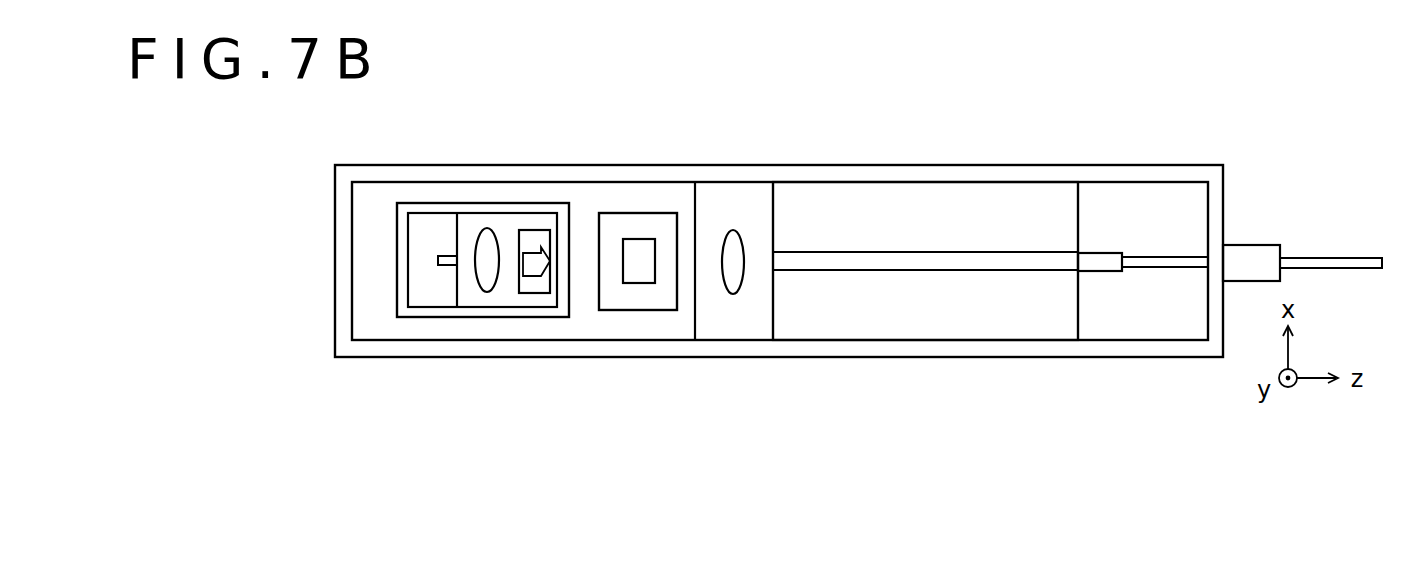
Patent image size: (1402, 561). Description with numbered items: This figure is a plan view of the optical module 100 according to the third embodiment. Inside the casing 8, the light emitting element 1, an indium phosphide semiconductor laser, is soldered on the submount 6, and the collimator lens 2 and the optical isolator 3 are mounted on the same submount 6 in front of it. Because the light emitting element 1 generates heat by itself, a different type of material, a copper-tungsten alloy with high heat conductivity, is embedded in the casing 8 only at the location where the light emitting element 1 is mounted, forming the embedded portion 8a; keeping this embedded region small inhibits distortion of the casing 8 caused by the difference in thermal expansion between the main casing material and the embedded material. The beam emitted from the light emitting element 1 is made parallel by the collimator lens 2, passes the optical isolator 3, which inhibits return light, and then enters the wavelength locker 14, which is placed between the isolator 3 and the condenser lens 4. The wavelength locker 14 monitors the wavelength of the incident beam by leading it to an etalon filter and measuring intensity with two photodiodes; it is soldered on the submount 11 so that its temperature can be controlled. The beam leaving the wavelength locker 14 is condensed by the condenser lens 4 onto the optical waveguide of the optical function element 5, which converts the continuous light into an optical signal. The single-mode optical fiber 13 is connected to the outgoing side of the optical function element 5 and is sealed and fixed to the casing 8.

The optical module 100 is at (1336, 128).
The embedded portion 8a is at (565, 222).
The submount 6 is at (505, 226).
The light emitting element 1 is at (445, 265).
The collimator lens 2 is at (487, 282).
The optical isolator 3 is at (531, 283).
The submount 11 is at (639, 225).
The wavelength locker 14 is at (638, 270).
The condenser lens 4 is at (733, 245).
The optical function element 5 is at (846, 262).
The casing 8 is at (953, 210).
The optical fiber 13 is at (1163, 262).